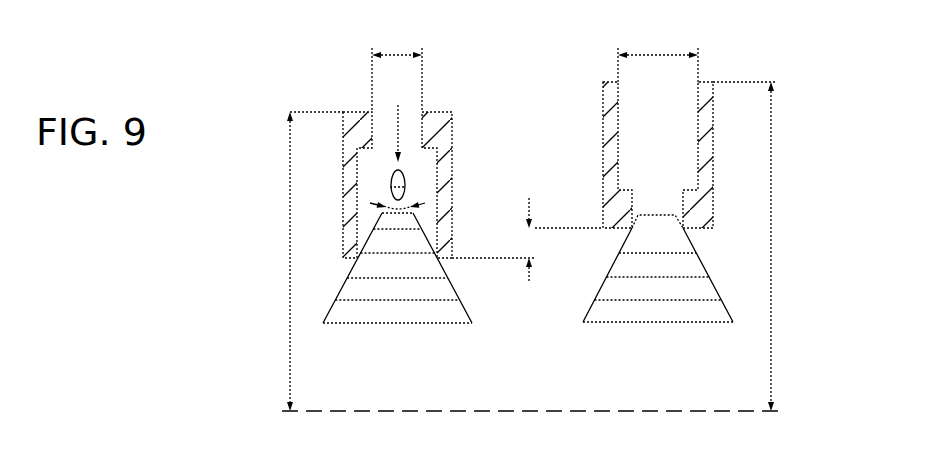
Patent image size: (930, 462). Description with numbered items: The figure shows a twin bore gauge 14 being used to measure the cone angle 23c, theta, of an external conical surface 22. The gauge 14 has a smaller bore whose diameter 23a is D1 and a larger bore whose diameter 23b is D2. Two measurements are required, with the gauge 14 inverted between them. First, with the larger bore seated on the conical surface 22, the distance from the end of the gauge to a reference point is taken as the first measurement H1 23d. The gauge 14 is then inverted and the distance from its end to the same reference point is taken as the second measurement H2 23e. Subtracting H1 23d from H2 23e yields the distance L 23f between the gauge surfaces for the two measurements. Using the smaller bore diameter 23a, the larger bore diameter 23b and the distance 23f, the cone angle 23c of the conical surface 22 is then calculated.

The twin bore gauge 14 is at (471, 110).
The external conical surface 22 is at (486, 330).
The diameter of the smaller bore 23a is at (397, 62).
The diameter of the larger bore 23b is at (658, 62).
The cone angle 23c is at (398, 105).
The first measurement H1 23d is at (290, 242).
The second measurement H2 23e is at (772, 241).
The distance between gauge surfaces 23f is at (527, 258).